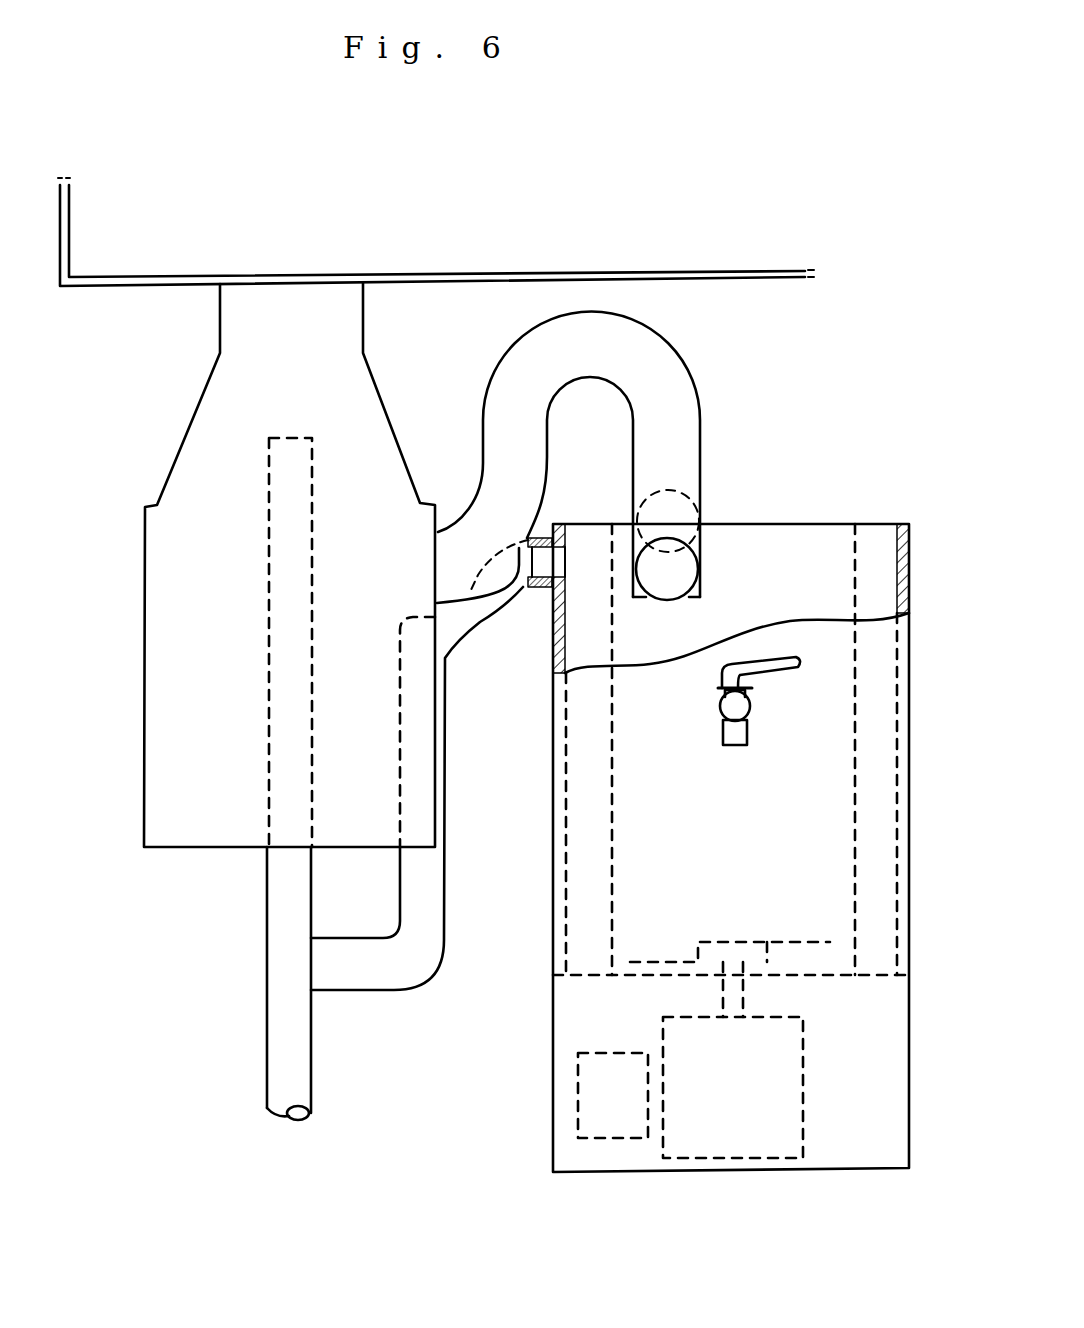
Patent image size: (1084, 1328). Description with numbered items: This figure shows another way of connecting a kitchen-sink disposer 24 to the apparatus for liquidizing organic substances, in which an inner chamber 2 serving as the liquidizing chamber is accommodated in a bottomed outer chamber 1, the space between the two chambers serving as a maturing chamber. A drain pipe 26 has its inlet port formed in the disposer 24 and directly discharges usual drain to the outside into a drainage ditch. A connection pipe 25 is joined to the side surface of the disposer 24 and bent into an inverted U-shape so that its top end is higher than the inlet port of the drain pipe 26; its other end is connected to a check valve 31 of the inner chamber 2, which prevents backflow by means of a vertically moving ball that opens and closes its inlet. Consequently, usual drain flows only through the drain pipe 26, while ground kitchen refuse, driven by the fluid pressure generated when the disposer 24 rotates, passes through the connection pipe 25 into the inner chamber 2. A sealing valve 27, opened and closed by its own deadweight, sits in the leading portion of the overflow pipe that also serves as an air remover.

The outer chamber 1 is at (912, 530).
The inner chamber 2 is at (790, 570).
The disposer 24 is at (192, 537).
The connection pipe 25 is at (638, 345).
The drain pipe 26 is at (268, 468).
The sealing valve 27 is at (495, 613).
The check valve 31 is at (683, 567).